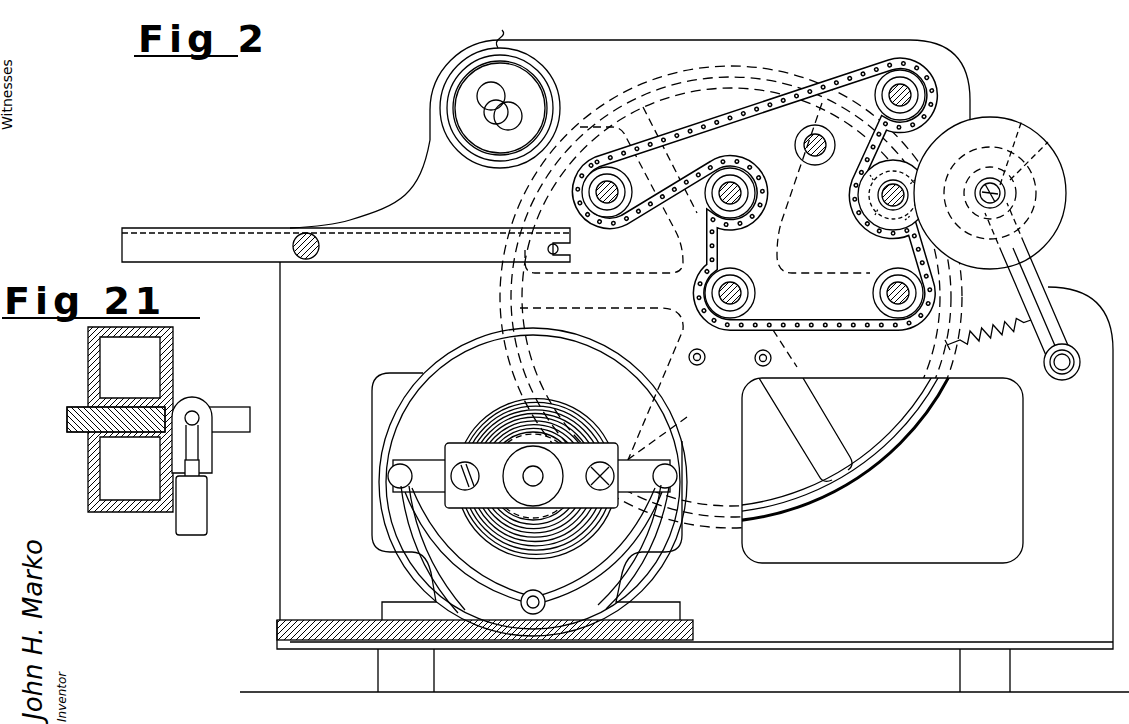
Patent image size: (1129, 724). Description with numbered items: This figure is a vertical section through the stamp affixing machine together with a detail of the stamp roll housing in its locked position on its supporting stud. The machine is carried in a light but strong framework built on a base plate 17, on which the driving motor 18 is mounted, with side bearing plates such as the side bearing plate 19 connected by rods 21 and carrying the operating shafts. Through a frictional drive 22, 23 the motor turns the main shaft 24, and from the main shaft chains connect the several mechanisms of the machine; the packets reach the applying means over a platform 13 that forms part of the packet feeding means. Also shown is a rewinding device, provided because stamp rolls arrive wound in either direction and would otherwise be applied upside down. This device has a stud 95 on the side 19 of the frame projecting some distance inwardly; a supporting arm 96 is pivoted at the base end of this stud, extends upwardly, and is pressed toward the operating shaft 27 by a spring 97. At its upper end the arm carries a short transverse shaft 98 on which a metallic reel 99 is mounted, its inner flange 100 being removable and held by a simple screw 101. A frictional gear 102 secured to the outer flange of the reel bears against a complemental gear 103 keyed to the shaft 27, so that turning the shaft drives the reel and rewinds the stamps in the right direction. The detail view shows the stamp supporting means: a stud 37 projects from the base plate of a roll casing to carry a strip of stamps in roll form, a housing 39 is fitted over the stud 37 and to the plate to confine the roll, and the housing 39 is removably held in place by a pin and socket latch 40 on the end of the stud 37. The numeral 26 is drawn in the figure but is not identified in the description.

In FIG. 2, the platform 13 is at (346, 245).
In FIG. 2, the base plate 17 is at (278, 620).
In FIG. 2, the driving motor 18 is at (533, 482).
In FIG. 2, the side bearing plate 19 is at (684, 361).
In FIG. 2, the rods 21 is at (803, 145).
In FIG. 2, the frictional drive 22 is at (535, 549).
In FIG. 2, the frictional drive 23 is at (805, 510).
In FIG. 2, the main shaft 24 is at (718, 292).
In FIG. 2, the stud 26 is at (758, 352).
In FIG. 2, the operating shaft 27 is at (912, 295).
In FIG. 21, the stud 37 is at (67, 420).
In FIG. 21, the housing 39 is at (173, 362).
In FIG. 21, the pin and socket latch 40 is at (197, 405).
In FIG. 2, the stud 95 is at (1062, 380).
In FIG. 2, the supporting arm 96 is at (1036, 280).
In FIG. 2, the spring 97 is at (988, 335).
In FIG. 2, the transverse shaft 98 is at (1005, 191).
In FIG. 2, the metallic reel 99 is at (1047, 226).
In FIG. 2, the inner flange 100 is at (1072, 252).
In FIG. 2, the screw 101 is at (1043, 154).
In FIG. 2, the frictional gear 102 is at (1014, 141).
In FIG. 2, the complemental gear 103 is at (850, 247).